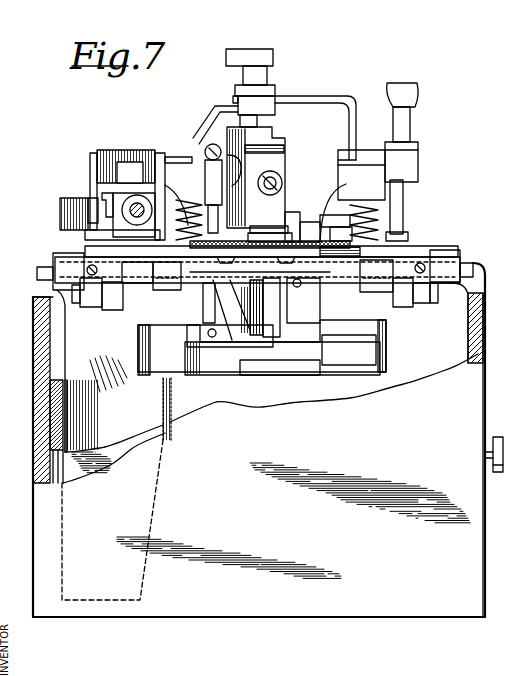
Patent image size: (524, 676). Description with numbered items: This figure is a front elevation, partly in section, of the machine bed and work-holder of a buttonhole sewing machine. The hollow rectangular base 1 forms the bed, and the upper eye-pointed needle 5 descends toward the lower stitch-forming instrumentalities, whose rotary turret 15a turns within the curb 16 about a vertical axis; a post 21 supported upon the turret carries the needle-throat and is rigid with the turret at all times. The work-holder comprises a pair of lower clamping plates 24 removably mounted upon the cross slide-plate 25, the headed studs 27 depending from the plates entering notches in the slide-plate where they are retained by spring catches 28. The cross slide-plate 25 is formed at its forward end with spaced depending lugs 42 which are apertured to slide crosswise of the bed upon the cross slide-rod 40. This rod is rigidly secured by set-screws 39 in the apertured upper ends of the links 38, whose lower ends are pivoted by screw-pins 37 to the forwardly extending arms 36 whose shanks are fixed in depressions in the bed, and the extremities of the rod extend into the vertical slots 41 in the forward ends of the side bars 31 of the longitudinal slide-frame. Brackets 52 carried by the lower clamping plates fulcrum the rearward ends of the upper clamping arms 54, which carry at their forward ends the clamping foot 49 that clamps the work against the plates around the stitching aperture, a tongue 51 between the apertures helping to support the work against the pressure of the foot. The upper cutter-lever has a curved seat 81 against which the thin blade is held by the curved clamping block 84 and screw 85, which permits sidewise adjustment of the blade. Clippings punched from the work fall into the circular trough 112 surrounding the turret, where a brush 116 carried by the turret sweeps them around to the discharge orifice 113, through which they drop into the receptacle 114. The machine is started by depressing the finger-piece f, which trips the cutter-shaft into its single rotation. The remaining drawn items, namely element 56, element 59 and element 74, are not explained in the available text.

The hollow rectangular base 1 is at (33, 418).
The upper eye-pointed needle 5 is at (240, 162).
The rotary turret 15a is at (262, 375).
The curb 16 is at (215, 375).
The post 21 is at (300, 328).
The lower clamping plates 24 is at (100, 249).
The cross slide-plate 25 is at (137, 254).
The headed studs 27 is at (218, 284).
The spring catches 28 is at (232, 290).
The side bars 31 is at (56, 261).
The forwardly extending arms 36 is at (110, 310).
The screw-pins 37 is at (76, 303).
The links 38 is at (92, 307).
The set-screws 39 is at (87, 274).
The cross slide-rod 40 is at (138, 283).
The vertical slots 41 is at (37, 274).
The depending lugs 42 is at (165, 290).
The clamping foot 49 is at (292, 238).
The tongue 51 is at (298, 232).
The brackets 52 is at (170, 245).
The upper clamping arms 54 is at (187, 157).
The screw 56 is at (213, 216).
The spring 59 is at (347, 232).
The valve body 74 is at (283, 143).
The seat 81 is at (285, 200).
The curved clamping block 84 is at (286, 187).
The screw 85 is at (274, 176).
The circular trough 112 is at (138, 348).
The discharge orifice 113 is at (166, 390).
The receptacle 114 is at (152, 512).
The brush 116 is at (357, 362).
The finger-piece f is at (158, 153).